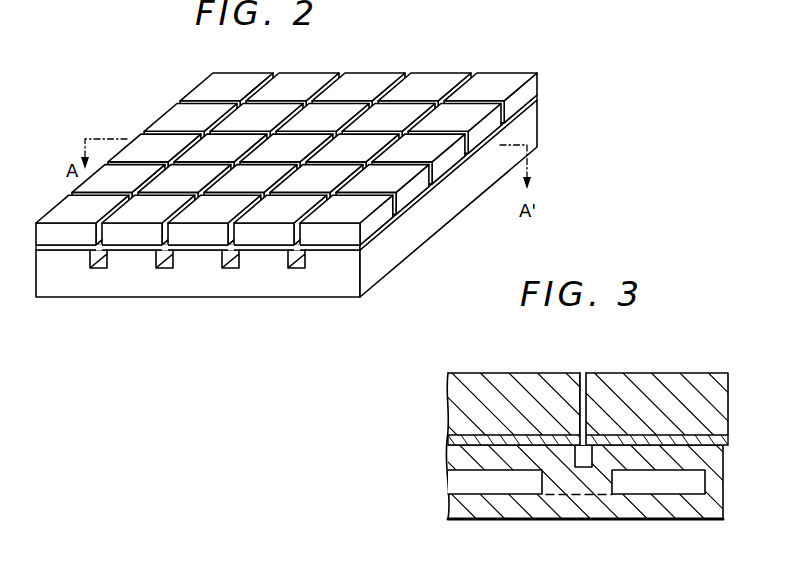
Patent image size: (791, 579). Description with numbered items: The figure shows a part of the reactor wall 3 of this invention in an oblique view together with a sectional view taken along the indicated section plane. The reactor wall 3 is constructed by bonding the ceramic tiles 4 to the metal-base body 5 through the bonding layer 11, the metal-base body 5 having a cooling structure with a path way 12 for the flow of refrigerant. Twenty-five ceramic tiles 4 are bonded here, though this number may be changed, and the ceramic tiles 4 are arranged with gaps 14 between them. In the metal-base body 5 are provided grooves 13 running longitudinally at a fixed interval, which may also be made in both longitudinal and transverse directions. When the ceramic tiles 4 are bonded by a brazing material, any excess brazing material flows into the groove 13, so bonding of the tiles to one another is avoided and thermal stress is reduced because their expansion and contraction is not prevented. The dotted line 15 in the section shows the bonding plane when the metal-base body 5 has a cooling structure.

In FIG. 2, the reactor wall 3 is at (390, 67).
In FIG. 3, the reactor wall 3 is at (628, 374).
In FIG. 2, the ceramic tiles 4 is at (539, 87).
In FIG. 3, the ceramic tiles 4 is at (730, 387).
In FIG. 2, the metal-base body 5 is at (153, 287).
In FIG. 3, the metal-base body 5 is at (723, 489).
In FIG. 2, the bonding layer 11 is at (538, 102).
In FIG. 3, the bonding layer 11 is at (730, 443).
In FIG. 3, the path way 12 is at (513, 483).
In FIG. 2, the grooves 13 is at (283, 259).
In FIG. 3, the grooves 13 is at (583, 461).
In FIG. 2, the gaps 14 is at (474, 75).
In FIG. 3, the gaps 14 is at (583, 373).
In FIG. 3, the dotted line 15 is at (713, 497).